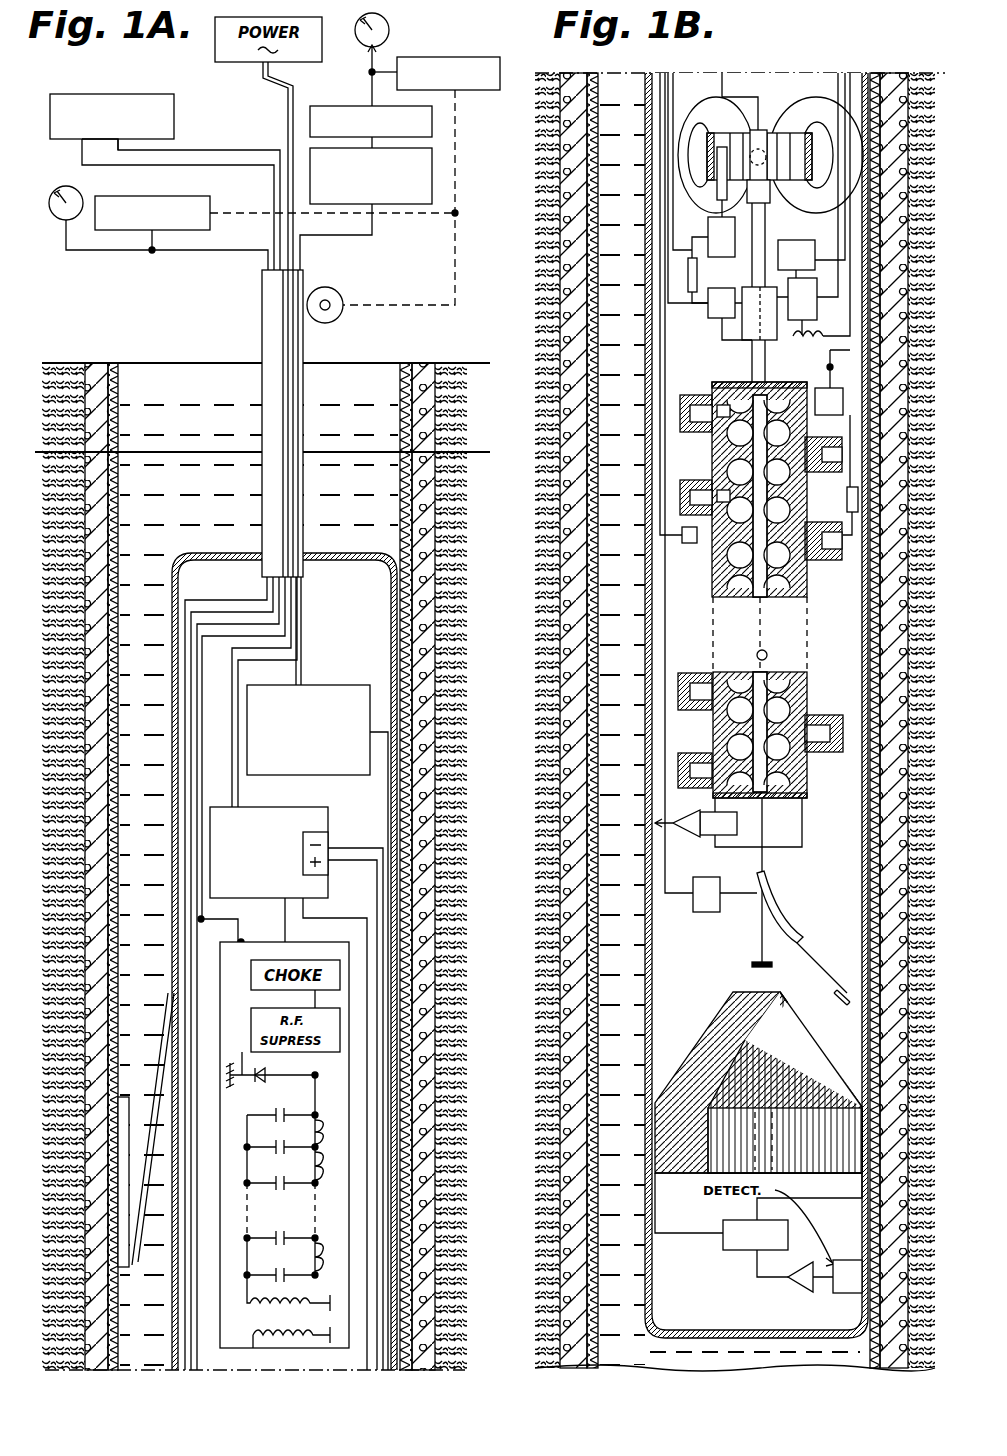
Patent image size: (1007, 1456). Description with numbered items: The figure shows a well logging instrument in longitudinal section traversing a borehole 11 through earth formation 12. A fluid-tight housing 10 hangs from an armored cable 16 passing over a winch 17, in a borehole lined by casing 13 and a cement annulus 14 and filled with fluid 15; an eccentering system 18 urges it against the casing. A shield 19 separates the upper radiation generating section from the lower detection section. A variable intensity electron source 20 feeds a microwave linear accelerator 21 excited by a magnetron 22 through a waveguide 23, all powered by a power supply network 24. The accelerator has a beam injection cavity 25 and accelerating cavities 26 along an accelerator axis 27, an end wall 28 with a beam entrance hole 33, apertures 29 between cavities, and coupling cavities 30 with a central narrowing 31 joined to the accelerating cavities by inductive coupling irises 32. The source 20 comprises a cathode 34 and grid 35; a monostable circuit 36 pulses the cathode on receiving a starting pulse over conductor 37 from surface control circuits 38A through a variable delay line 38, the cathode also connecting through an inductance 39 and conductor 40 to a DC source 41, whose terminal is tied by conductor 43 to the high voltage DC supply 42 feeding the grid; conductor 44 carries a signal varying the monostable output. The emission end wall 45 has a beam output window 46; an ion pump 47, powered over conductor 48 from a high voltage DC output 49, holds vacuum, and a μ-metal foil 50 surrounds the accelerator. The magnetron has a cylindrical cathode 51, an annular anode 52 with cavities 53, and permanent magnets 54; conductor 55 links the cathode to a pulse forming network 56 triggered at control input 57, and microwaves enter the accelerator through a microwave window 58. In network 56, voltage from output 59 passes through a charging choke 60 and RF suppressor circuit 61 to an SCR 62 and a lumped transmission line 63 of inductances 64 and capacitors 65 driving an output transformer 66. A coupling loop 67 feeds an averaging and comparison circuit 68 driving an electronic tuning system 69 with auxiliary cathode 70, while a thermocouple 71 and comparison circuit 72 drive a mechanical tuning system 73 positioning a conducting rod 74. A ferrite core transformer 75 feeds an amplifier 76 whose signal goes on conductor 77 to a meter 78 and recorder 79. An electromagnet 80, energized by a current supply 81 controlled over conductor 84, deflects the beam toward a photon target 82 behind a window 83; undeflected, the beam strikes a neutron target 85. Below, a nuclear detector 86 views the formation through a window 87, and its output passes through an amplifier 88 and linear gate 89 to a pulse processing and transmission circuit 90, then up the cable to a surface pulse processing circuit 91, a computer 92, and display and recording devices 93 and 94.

In FIG. 1A, the fluid-tight housing 10 is at (225, 552).
In FIG. 1B, the fluid-tight housing 10 is at (645, 1018).
In FIG. 1A, the borehole 11 is at (72, 548).
In FIG. 1B, the borehole 11 is at (558, 560).
In FIG. 1A, the earth formation 12 is at (455, 505).
In FIG. 1B, the earth formation 12 is at (912, 283).
In FIG. 1A, the casing 13 is at (122, 372).
In FIG. 1B, the casing 13 is at (617, 770).
In FIG. 1A, the cement annulus 14 is at (97, 493).
In FIG. 1B, the cement annulus 14 is at (734, 720).
In FIG. 1A, the fluid 15 is at (176, 412).
In FIG. 1B, the fluid 15 is at (598, 635).
In FIG. 1A, the armored cable 16 is at (262, 343).
In FIG. 1A, the winch 17 is at (341, 296).
In FIG. 1A, the eccentering means 18 is at (130, 1262).
In FIG. 1B, the shield 19 is at (705, 1033).
In FIG. 1B, the variable intensity source 20 is at (726, 342).
In FIG. 1B, the microwave linear particle accelerator 21 is at (820, 598).
In FIG. 1B, the magnetron 22 is at (707, 140).
In FIG. 1B, the waveguide 23 is at (780, 228).
In FIG. 1A, the power supply network 24 is at (322, 812).
In FIG. 1B, the beam injection cavity 25 is at (745, 380).
In FIG. 1B, the accelerating cavities 26 is at (795, 712).
In FIG. 1B, the accelerator axis 27 is at (755, 555).
In FIG. 1B, the end wall 28 is at (712, 385).
In FIG. 1B, the cylindrical apertures 29 is at (752, 470).
In FIG. 1B, the coupling cavities 30 is at (680, 410).
In FIG. 1B, the central narrowing 31 is at (712, 430).
In FIG. 1B, the inductive coupling irises 32 is at (805, 470).
In FIG. 1B, the beam entrance hole 33 is at (753, 374).
In FIG. 1B, the cathode 34 is at (805, 340).
In FIG. 1B, the grid 35 is at (829, 368).
In FIG. 1B, the monostable circuit 36 is at (708, 308).
In FIG. 1A, the conductor 37 is at (162, 148).
In FIG. 1B, the conductor 37 is at (680, 85).
In FIG. 1B, the variable delay line 38 is at (708, 276).
In FIG. 1A, the control circuits 38A is at (112, 94).
In FIG. 1B, the inductance 39 is at (850, 345).
In FIG. 1A, the conductor 40 is at (352, 1115).
In FIG. 1B, the conductor 40 is at (847, 78).
In FIG. 1A, the DC source 41 is at (318, 832).
In FIG. 1B, the high voltage DC supply 42 is at (856, 404).
In FIG. 1A, the conductor 43 is at (340, 848).
In FIG. 1B, the conductor 43 is at (880, 112).
In FIG. 1A, the conductor 44 is at (122, 150).
In FIG. 1B, the conductor 44 is at (668, 85).
In FIG. 1B, the emission end wall 45 is at (800, 847).
In FIG. 1B, the beam output window 46 is at (768, 855).
In FIG. 1B, the ion pump 47 is at (798, 302).
In FIG. 1A, the conductor 48 is at (346, 922).
In FIG. 1B, the conductor 48 is at (838, 78).
In FIG. 1A, the high voltage DC output 49 is at (303, 896).
In FIG. 1B, the μ-metal foil 50 is at (840, 560).
In FIG. 1B, the cylindrical cathode 51 is at (760, 130).
In FIG. 1B, the annular anode 52 is at (717, 165).
In FIG. 1B, the cavities 53 is at (722, 147).
In FIG. 1B, the permanent magnets 54 is at (690, 237).
In FIG. 1A, the conductor 55 is at (253, 1348).
In FIG. 1B, the conductor 55 is at (722, 73).
In FIG. 1A, the pulse forming network 56 is at (350, 1183).
In FIG. 1A, the control input 57 is at (200, 920).
In FIG. 1B, the microwave window 58 is at (768, 655).
In FIG. 1A, the output 59 is at (272, 898).
In FIG. 1A, the charging choke 60 is at (268, 960).
In FIG. 1A, the RF suppressor circuit 61 is at (268, 1072).
In FIG. 1A, the SCR 62 is at (263, 1082).
In FIG. 1A, the lumped equivalent transmission line 63 is at (240, 1170).
In FIG. 1A, the inductances 64 is at (320, 1140).
In FIG. 1A, the capacitors 65 is at (276, 1115).
In FIG. 1A, the output transformer 66 is at (238, 1313).
In FIG. 1B, the coupling loop 67 is at (843, 552).
In FIG. 1B, the averaging and comparison circuit 68 is at (860, 502).
In FIG. 1B, the electronic tuning system 69 is at (828, 254).
In FIG. 1B, the auxiliary cathode 70 is at (770, 192).
In FIG. 1B, the thermocouple 71 is at (868, 480).
In FIG. 1B, the comparison circuit 72 is at (688, 528).
In FIG. 1B, the mechanical tuning system 73 is at (708, 242).
In FIG. 1B, the conducting rod 74 is at (718, 200).
In FIG. 1B, the ferrite core transformer 75 is at (740, 825).
In FIG. 1B, the amplifier 76 is at (692, 840).
In FIG. 1A, the conductor 77 is at (122, 252).
In FIG. 1B, the conductor 77 is at (650, 855).
In FIG. 1A, the meter 78 is at (50, 218).
In FIG. 1A, the recorder 79 is at (210, 228).
In FIG. 1B, the electromagnet 80 is at (788, 930).
In FIG. 1B, the current supply 81 is at (712, 912).
In FIG. 1B, the target 82 is at (850, 990).
In FIG. 1B, the window 83 is at (865, 1030).
In FIG. 1A, the conductor 84 is at (82, 160).
In FIG. 1B, the conductor 84 is at (682, 538).
In FIG. 1B, the second target 85 is at (752, 960).
In FIG. 1B, the nuclear detector 86 is at (846, 1262).
In FIG. 1B, the window 87 is at (848, 1293).
In FIG. 1B, the amplifier 88 is at (798, 1292).
In FIG. 1B, the linear gate 89 is at (723, 1248).
In FIG. 1A, the pulse processing and transmission circuit 90 is at (350, 685).
In FIG. 1A, the cable interface and pulse processing circuit 91 is at (417, 205).
In FIG. 1A, the computer 92 is at (432, 124).
In FIG. 1A, the display device 93 is at (390, 25).
In FIG. 1A, the recording device 94 is at (490, 57).